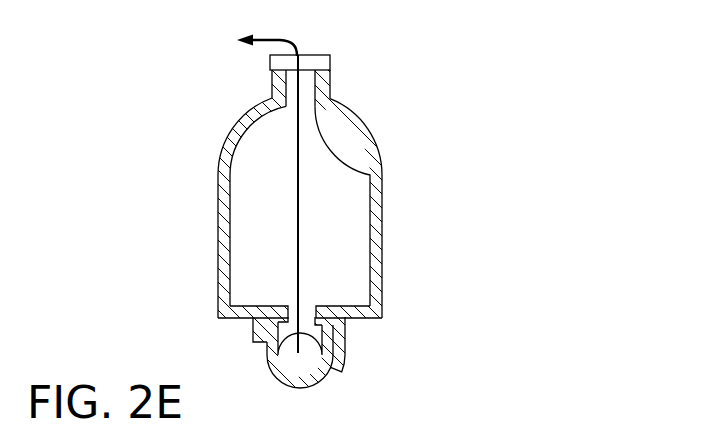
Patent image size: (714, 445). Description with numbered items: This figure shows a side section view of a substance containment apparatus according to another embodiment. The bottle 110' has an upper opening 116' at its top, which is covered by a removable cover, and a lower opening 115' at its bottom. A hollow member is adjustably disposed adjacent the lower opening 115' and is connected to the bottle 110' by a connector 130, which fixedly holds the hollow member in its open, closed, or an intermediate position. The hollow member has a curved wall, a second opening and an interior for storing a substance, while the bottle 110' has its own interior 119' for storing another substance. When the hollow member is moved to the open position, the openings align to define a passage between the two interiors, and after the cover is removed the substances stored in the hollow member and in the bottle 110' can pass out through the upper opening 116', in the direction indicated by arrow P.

The bottle 110' is at (297, 178).
The upper opening 116' is at (357, 88).
The interior of the bottle 119' is at (347, 208).
The lower opening 115' is at (344, 300).
The connector 130 is at (256, 330).
The passage arrow P is at (262, 32).